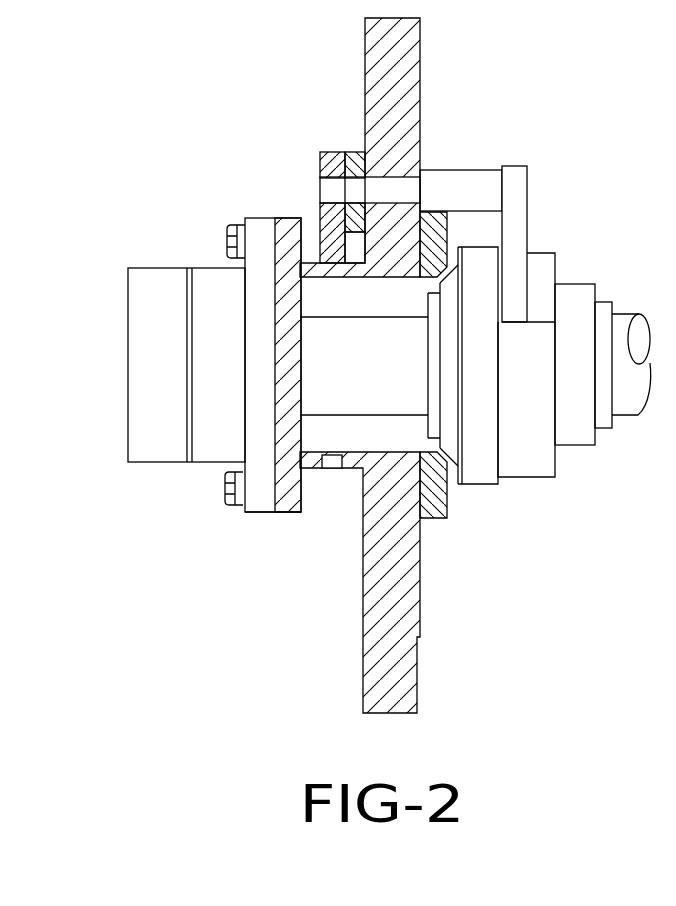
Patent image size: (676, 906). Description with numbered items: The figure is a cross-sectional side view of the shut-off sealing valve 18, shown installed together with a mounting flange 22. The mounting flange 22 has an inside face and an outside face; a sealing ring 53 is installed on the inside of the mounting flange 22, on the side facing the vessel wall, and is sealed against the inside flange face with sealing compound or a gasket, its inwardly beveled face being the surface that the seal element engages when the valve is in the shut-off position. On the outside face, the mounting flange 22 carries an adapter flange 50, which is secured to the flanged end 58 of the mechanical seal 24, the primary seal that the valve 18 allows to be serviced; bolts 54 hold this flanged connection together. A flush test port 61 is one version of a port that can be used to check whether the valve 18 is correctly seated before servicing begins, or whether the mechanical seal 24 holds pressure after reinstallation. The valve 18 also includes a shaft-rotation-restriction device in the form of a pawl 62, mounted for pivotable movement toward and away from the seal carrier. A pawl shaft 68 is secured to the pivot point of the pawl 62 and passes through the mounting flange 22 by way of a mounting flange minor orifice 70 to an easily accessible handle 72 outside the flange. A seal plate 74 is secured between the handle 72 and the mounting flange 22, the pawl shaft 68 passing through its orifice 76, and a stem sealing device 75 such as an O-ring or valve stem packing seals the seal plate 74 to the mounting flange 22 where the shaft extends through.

The shut-off sealing valve 18 is at (535, 465).
The mounting flange 22 is at (400, 665).
The mechanical seal 24 is at (153, 453).
The adapter flange 50 is at (292, 512).
The sealing ring 53 is at (428, 518).
The bolt 54 is at (227, 493).
The flanged end 58 is at (255, 515).
The flush test port 61 is at (332, 458).
The pawl 62 is at (520, 182).
The pawl shaft 68 is at (482, 178).
The mounting flange minor orifice 70 is at (398, 177).
The handle 72 is at (328, 170).
The seal plate 74 is at (355, 183).
The stem sealing device 75 is at (362, 205).
The orifice 76 is at (357, 160).